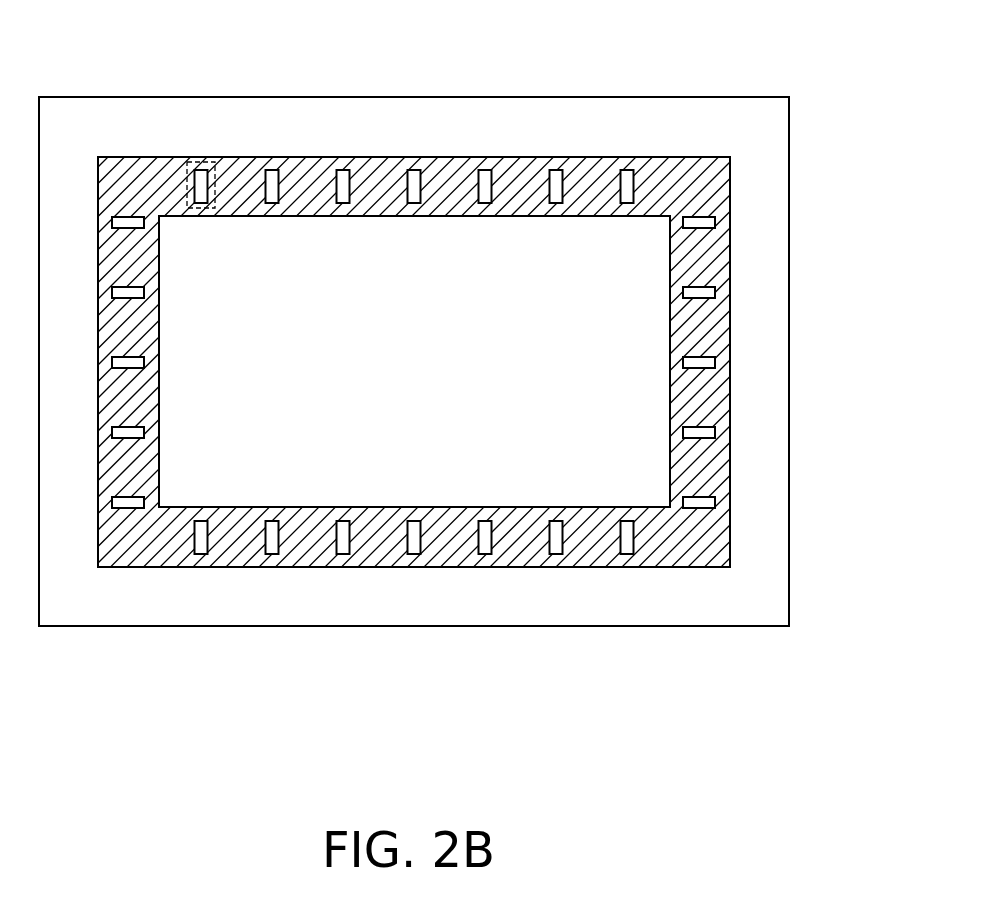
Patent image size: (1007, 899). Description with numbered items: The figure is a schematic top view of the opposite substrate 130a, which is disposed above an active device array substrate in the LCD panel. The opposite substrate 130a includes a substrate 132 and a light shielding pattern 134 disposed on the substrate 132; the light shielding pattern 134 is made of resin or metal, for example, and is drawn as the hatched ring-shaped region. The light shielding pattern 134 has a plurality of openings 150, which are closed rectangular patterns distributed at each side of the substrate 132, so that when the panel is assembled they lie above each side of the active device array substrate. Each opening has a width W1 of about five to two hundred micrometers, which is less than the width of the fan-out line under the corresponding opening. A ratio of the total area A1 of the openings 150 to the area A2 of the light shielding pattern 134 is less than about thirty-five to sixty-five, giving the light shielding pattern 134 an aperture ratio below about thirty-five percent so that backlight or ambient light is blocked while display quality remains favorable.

The opposite substrate 130a is at (851, 685).
The substrate 132 is at (763, 131).
The light shielding pattern 134 is at (686, 181).
The openings 150 is at (202, 170).
The area of each of the openings in total A1 is at (226, 178).
The area of the light shielding pattern A2 is at (242, 188).
The width of each of the openings W1 is at (195, 205).